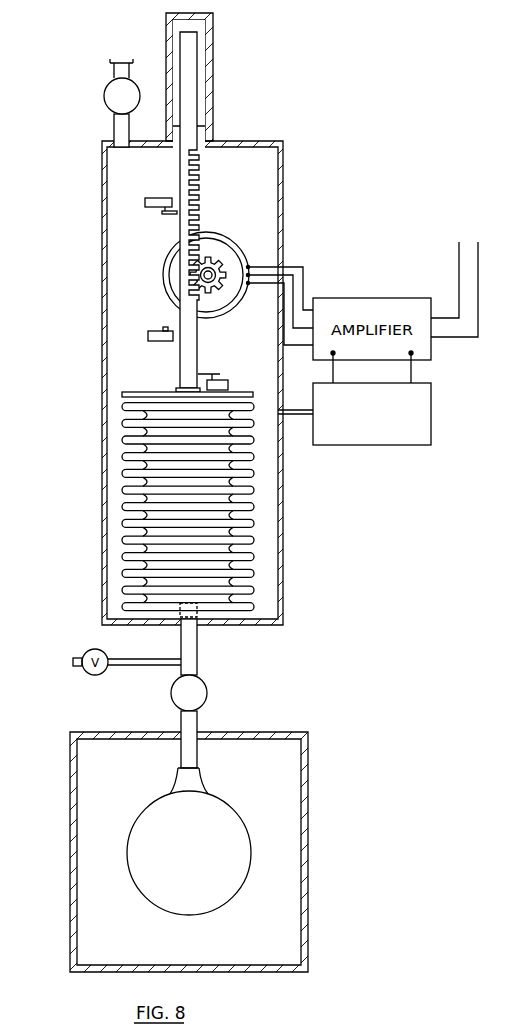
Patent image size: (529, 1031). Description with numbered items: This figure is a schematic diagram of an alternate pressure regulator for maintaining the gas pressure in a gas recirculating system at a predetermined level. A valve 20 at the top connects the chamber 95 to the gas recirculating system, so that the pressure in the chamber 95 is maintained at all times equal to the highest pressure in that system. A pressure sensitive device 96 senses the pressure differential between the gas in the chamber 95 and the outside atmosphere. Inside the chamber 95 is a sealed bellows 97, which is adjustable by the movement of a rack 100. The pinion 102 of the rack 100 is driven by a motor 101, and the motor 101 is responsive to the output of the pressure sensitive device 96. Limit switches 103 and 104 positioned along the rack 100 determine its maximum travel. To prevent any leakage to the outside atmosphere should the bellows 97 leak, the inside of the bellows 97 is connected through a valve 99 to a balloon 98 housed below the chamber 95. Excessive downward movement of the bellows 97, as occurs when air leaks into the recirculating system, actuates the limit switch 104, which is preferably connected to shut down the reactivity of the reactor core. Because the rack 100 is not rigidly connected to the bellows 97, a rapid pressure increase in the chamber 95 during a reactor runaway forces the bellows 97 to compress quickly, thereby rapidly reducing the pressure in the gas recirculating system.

The valve 20 is at (103, 97).
The chamber 95 is at (263, 182).
The pressure sensitive device 96 is at (415, 435).
The sealed bellows 97 is at (250, 540).
The balloon 98 is at (233, 835).
The valve 99 is at (202, 689).
The rack 100 is at (187, 322).
The motor 101 is at (247, 253).
The pinion 102 is at (220, 262).
The limit switch 103 is at (150, 198).
The limit switch 104 is at (147, 332).